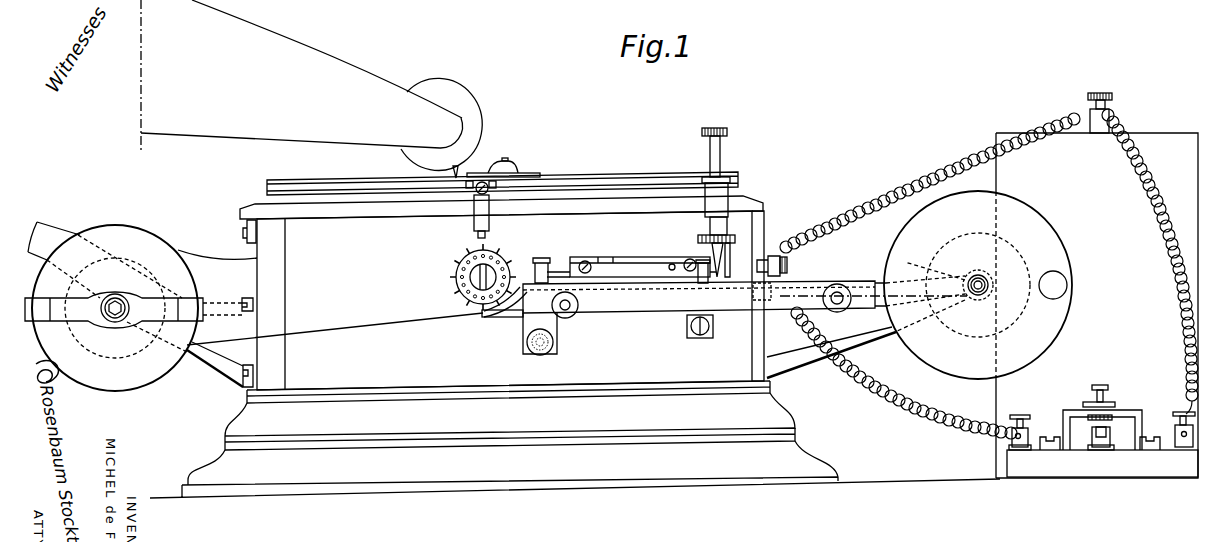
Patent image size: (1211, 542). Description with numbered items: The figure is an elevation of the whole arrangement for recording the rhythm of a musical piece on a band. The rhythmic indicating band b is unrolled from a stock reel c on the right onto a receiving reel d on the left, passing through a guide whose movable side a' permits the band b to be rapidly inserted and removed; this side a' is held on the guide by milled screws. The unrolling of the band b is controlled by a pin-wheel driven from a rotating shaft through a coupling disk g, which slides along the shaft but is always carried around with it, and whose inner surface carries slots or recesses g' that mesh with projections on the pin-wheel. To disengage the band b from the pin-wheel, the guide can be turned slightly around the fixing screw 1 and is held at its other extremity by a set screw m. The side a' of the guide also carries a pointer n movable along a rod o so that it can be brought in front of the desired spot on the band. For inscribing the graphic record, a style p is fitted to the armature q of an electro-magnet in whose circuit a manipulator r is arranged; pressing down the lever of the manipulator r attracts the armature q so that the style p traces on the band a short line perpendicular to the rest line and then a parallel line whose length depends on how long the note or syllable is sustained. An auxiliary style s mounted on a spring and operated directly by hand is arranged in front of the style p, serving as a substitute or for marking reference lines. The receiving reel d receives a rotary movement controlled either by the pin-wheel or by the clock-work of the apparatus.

The receiving reel d is at (143, 240).
The rhythmic indicating band b is at (363, 321).
The coupling disk g is at (491, 246).
The slots or recesses g' is at (479, 283).
The movable side of the guide a' is at (684, 299).
The set screw m is at (526, 343).
The block 1 is at (698, 338).
The pointer n is at (593, 257).
The rod o is at (647, 272).
The armature q is at (683, 258).
The auxiliary style s is at (729, 242).
The style p is at (760, 248).
The stock reel c is at (978, 285).
The manipulator r is at (1103, 415).